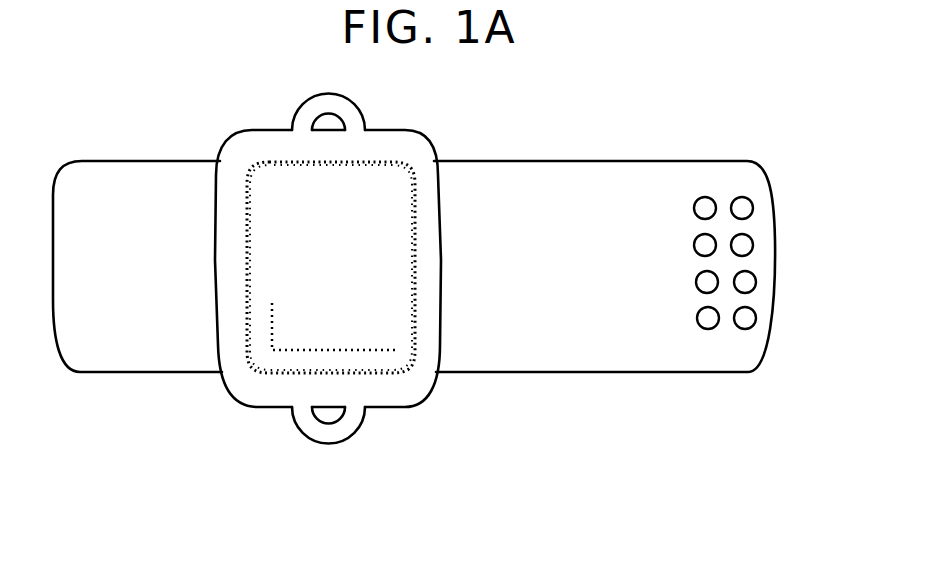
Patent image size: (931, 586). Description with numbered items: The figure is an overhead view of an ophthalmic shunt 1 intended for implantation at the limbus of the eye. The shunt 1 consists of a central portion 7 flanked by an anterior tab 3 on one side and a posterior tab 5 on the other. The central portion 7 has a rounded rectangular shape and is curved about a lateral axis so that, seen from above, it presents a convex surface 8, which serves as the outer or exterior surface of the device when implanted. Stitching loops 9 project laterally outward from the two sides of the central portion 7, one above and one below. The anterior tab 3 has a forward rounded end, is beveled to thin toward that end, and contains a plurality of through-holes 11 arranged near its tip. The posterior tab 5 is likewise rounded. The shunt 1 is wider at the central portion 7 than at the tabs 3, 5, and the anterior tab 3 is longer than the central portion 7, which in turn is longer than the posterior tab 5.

The shunt 1 is at (513, 141).
The anterior tab 3 is at (677, 356).
The posterior tab 5 is at (155, 372).
The central portion 7 is at (413, 388).
The convex surface 8 is at (343, 289).
The stitching loops 9 is at (362, 422).
The through-holes 11 is at (752, 247).